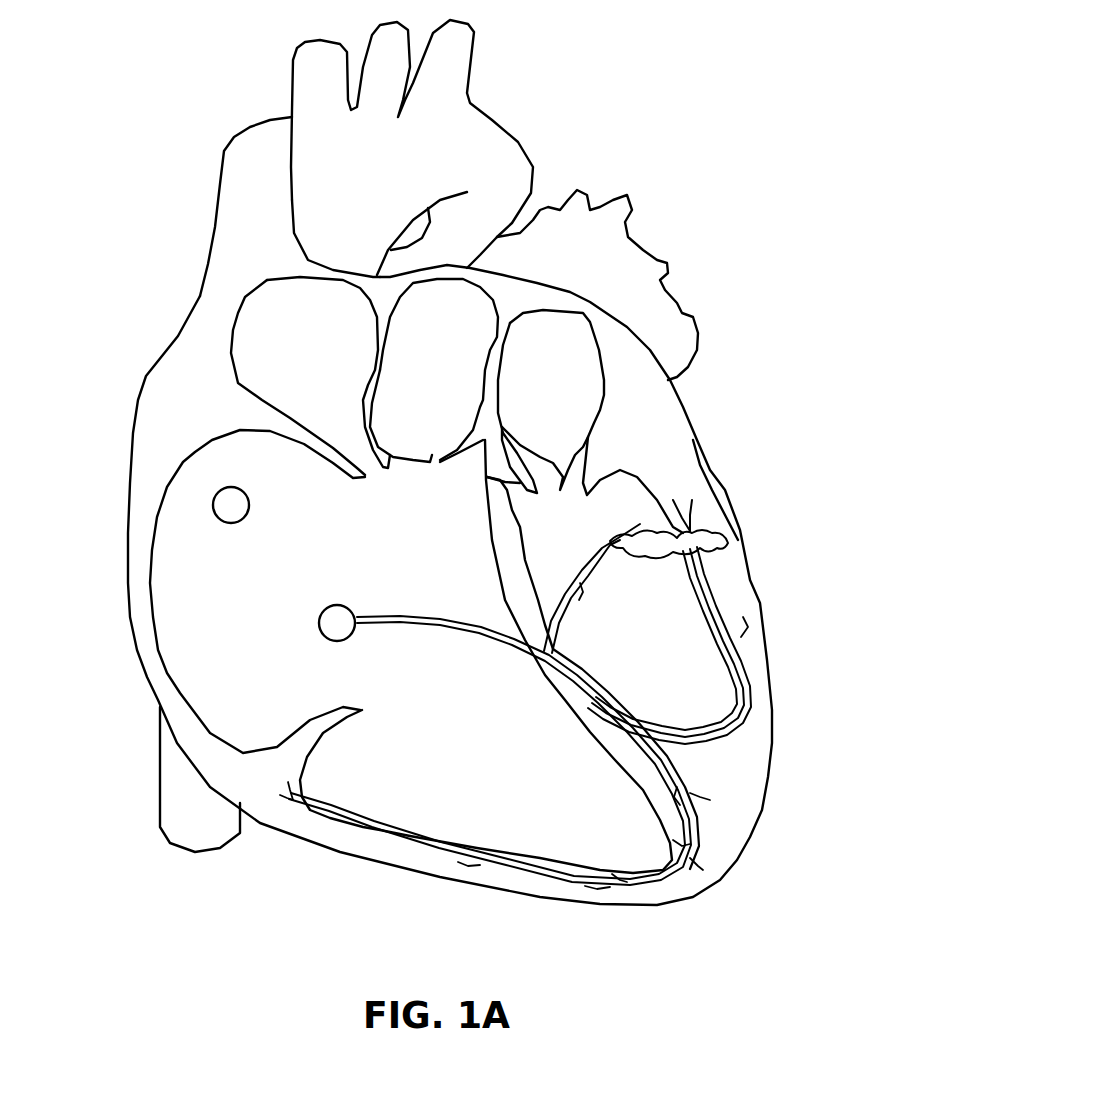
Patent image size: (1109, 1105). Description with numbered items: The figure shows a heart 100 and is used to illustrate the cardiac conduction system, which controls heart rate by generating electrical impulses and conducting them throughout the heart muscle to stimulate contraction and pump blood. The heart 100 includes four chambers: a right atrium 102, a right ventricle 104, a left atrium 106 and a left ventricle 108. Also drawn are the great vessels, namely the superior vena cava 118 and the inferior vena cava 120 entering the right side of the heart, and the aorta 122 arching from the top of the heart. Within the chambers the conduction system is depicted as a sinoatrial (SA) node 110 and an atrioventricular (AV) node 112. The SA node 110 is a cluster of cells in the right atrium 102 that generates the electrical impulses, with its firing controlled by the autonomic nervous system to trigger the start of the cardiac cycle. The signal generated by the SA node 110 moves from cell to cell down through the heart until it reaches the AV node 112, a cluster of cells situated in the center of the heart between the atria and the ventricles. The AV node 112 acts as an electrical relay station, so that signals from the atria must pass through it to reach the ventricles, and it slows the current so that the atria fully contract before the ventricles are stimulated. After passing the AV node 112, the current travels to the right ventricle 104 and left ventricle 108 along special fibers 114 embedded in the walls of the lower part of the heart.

The heart 100 is at (716, 59).
The right atrium 102 is at (204, 591).
The right ventricle 104 is at (486, 685).
The left atrium 106 is at (629, 421).
The left ventricle 108 is at (663, 673).
The sinoatrial (SA) node 110 is at (148, 503).
The atrioventricular (AV) node 112 is at (315, 655).
The special fibers 114 is at (495, 752).
The superior vena cava 118 is at (215, 206).
The inferior vena cava 120 is at (152, 779).
The aorta 122 is at (448, 148).